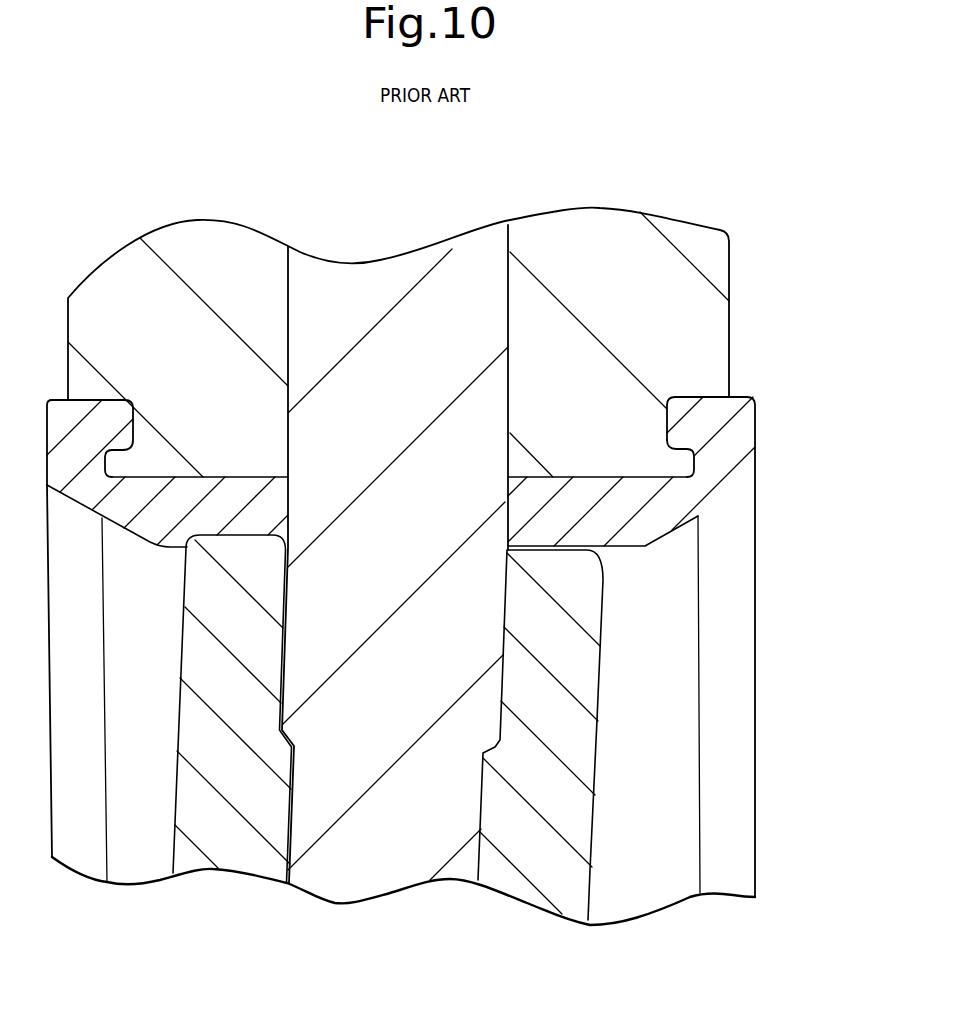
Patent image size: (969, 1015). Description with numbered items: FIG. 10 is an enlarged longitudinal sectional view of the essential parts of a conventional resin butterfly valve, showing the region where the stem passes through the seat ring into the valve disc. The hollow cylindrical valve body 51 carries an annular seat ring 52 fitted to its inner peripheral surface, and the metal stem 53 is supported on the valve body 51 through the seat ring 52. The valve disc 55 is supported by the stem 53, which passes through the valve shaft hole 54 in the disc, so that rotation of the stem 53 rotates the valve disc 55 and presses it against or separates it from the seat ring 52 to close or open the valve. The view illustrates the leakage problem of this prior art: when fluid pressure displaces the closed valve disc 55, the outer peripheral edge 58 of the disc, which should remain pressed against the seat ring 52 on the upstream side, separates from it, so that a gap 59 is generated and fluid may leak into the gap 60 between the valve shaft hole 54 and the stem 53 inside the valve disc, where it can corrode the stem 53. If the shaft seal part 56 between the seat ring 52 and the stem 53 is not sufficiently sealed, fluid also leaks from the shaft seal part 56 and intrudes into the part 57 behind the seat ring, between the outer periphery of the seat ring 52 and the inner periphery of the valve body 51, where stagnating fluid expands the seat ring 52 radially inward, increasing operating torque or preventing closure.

The valve body 51 is at (612, 282).
The seat ring 52 is at (723, 447).
The stem 53 is at (416, 365).
The valve shaft hole 54 is at (483, 815).
The valve disc 55 is at (548, 787).
The shaft seal part 56 is at (507, 503).
The part behind the seat ring 57 is at (597, 477).
The outer peripheral edge 58 is at (557, 552).
The gap 59 is at (593, 550).
The gap 60 is at (500, 687).